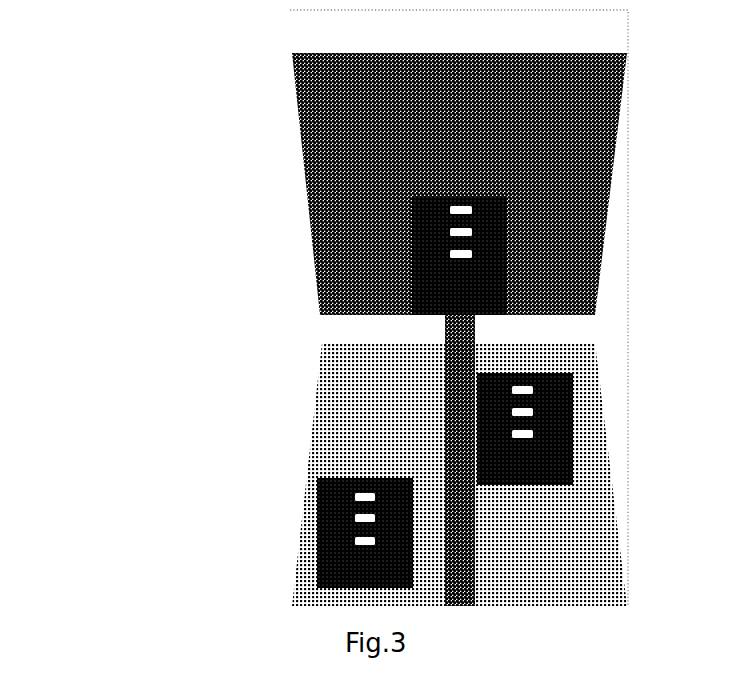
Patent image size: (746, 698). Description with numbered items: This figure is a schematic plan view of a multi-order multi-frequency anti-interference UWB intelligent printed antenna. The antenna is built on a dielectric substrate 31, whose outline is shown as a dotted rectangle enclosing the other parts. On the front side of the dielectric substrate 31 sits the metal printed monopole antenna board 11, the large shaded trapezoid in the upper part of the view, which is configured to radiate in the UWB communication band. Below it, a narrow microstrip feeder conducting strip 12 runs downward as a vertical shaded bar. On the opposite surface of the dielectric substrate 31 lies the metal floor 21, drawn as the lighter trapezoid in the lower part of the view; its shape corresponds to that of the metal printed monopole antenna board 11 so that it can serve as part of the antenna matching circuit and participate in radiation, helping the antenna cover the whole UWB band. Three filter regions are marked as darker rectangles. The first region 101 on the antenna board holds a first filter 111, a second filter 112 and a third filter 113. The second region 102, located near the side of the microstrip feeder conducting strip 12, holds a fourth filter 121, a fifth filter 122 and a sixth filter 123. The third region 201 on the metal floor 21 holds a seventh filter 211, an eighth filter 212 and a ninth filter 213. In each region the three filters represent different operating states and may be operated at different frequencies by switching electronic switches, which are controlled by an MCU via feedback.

The dielectric substrate 31 is at (322, 33).
The metal printed monopole antenna board 11 is at (325, 141).
The first region 101 is at (323, 302).
The first filter 111 is at (450, 210).
The second filter 112 is at (450, 233).
The third filter 113 is at (450, 255).
The microstrip feeder conducting strip 12 is at (445, 392).
The second region 102 is at (545, 482).
The fourth filter 121 is at (533, 390).
The fifth filter 122 is at (533, 412).
The sixth filter 123 is at (533, 435).
The metal floor 21 is at (345, 447).
The third region 201 is at (330, 583).
The seventh filter 211 is at (355, 496).
The eighth filter 212 is at (355, 518).
The ninth filter 213 is at (355, 540).